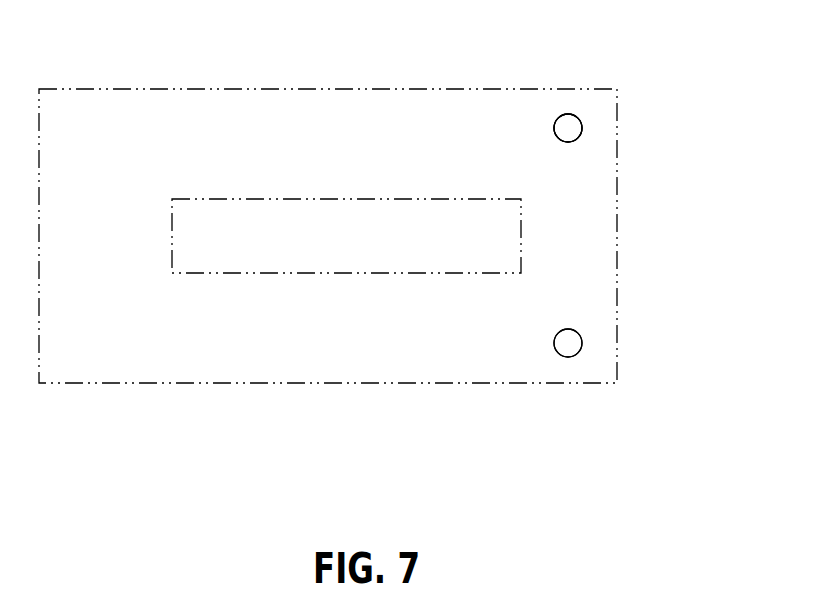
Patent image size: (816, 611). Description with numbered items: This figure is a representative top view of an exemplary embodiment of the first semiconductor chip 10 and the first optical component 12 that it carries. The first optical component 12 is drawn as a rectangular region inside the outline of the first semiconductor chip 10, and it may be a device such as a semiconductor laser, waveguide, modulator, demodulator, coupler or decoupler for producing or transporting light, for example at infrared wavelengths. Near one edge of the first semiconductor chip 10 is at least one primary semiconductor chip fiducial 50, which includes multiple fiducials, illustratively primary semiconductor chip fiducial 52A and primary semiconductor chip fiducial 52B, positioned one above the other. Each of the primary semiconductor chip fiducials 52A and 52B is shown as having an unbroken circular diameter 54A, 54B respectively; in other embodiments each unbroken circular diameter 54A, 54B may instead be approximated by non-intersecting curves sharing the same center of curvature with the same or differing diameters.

The first semiconductor chip 10 is at (300, 385).
The first optical component 12 is at (348, 193).
The primary semiconductor chip fiducial 50 is at (583, 142).
The primary semiconductor chip fiducial 52A is at (588, 127).
The primary semiconductor chip fiducial 52B is at (586, 340).
The unbroken circular diameter 54A is at (567, 113).
The unbroken circular diameter 54B is at (568, 357).